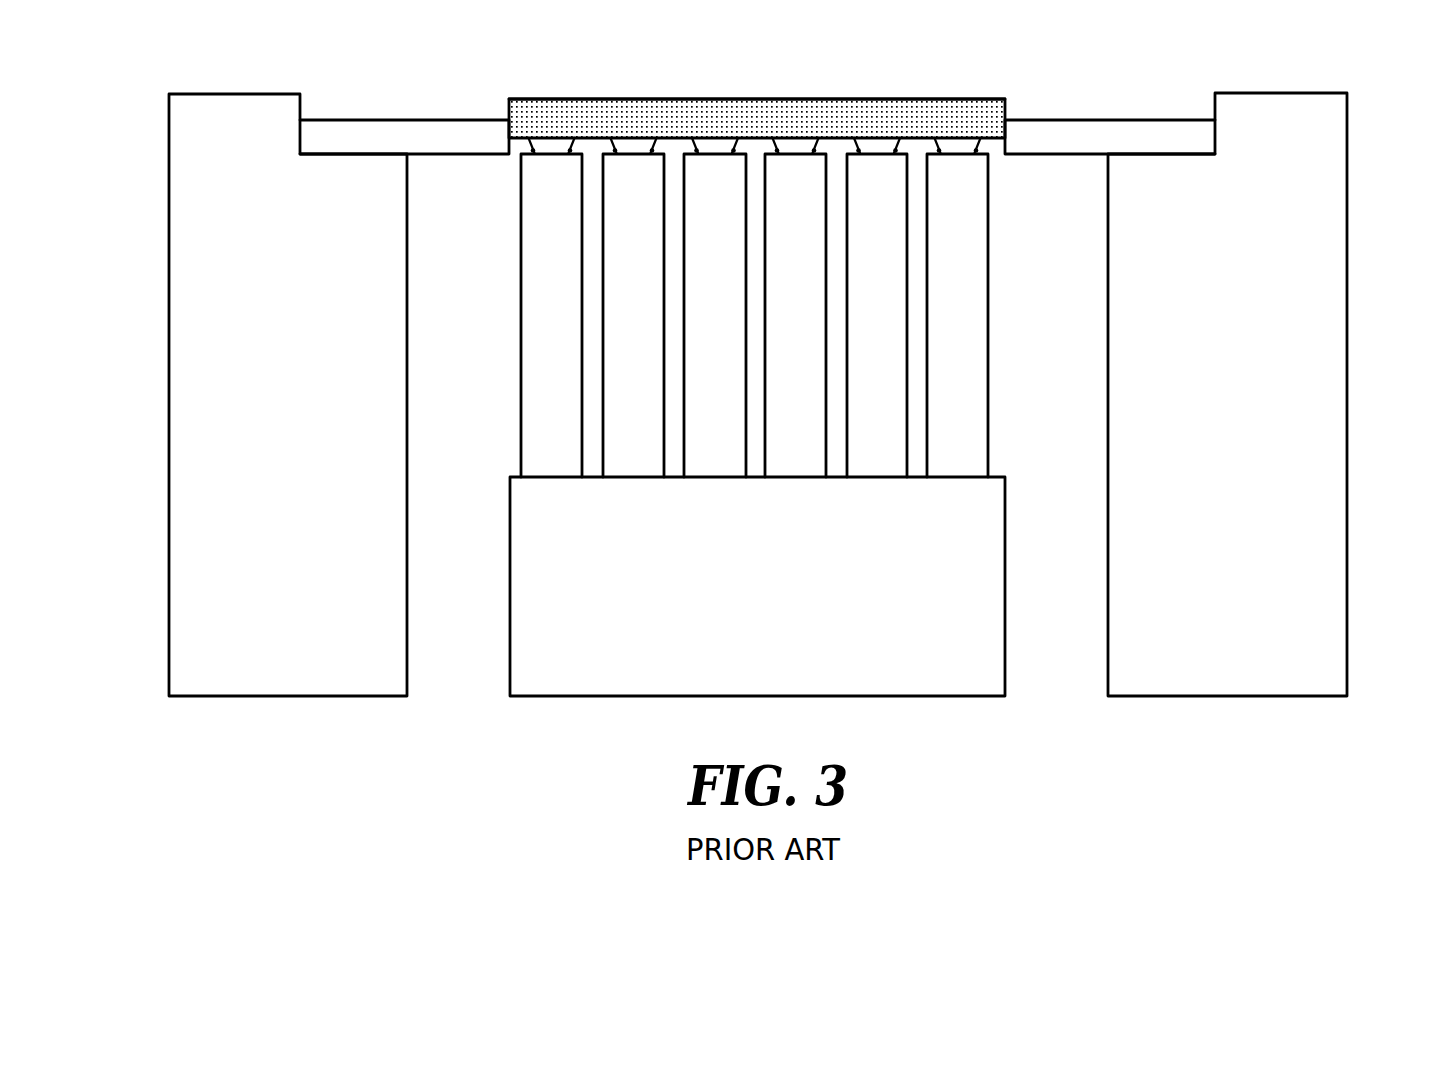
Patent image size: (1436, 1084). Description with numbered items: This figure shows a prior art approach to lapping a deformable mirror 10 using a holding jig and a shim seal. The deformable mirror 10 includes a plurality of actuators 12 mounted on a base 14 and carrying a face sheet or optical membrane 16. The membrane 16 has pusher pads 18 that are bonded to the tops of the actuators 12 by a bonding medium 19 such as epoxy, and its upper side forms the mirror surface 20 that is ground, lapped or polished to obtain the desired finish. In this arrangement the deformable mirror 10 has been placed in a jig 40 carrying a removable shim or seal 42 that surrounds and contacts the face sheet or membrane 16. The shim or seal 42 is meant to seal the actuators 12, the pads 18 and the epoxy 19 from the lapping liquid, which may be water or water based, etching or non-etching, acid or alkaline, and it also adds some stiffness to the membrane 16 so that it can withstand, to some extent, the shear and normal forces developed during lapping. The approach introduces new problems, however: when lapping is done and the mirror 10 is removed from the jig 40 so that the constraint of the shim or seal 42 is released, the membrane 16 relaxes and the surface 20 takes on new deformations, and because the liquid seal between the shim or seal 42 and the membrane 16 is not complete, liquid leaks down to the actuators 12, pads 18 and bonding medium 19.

The deformable mirror 10 is at (969, 757).
The actuators 12 is at (802, 313).
The base 14 is at (958, 545).
The face sheet or optical membrane 16 is at (925, 113).
The pusher pads 18 is at (802, 140).
The bonding medium 19 is at (697, 152).
The mirror surface 20 is at (759, 99).
The jig 40 is at (202, 546).
The shim or seal 42 is at (363, 138).